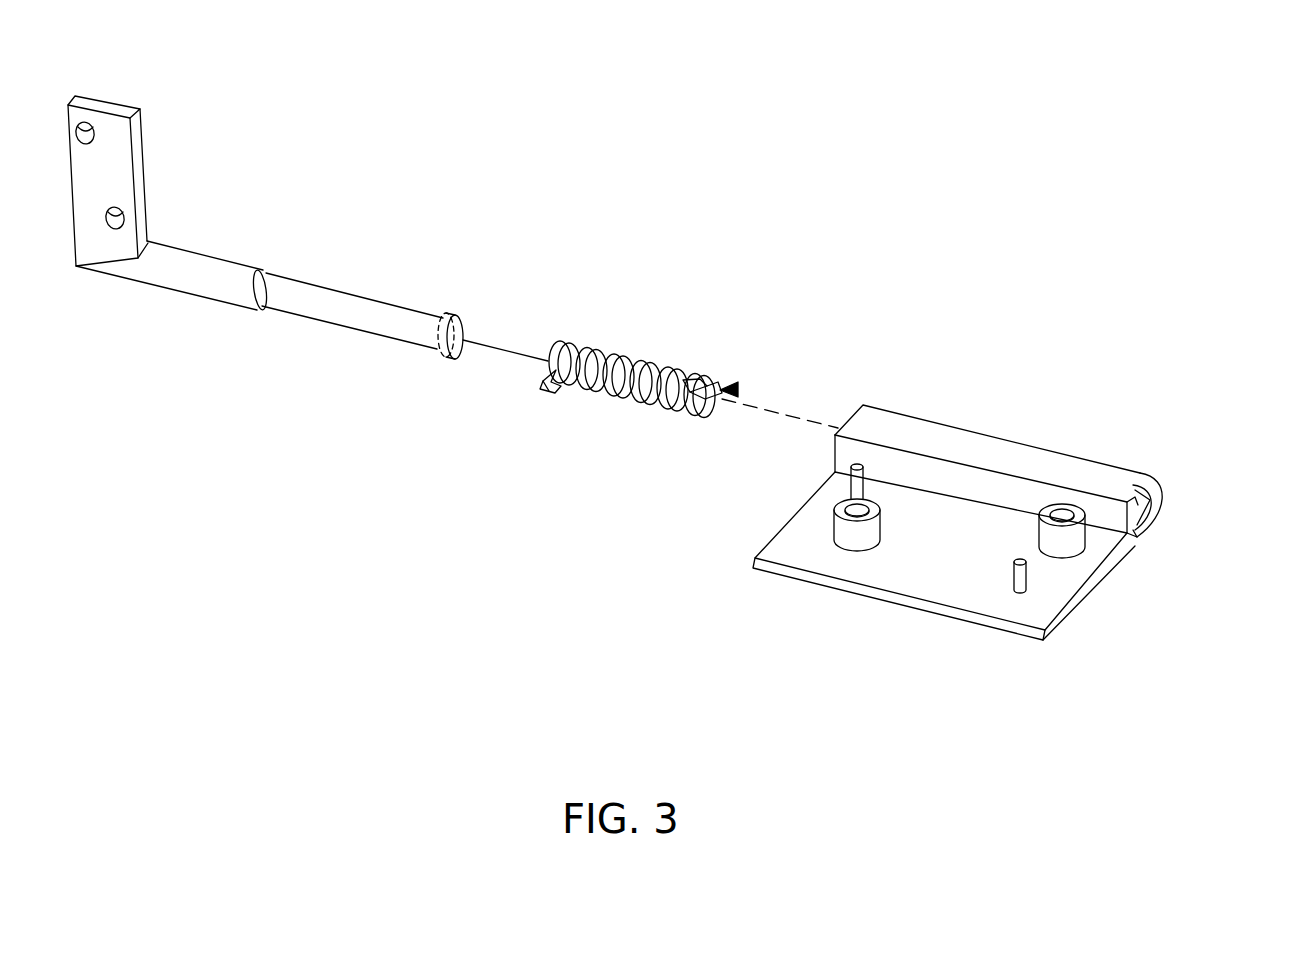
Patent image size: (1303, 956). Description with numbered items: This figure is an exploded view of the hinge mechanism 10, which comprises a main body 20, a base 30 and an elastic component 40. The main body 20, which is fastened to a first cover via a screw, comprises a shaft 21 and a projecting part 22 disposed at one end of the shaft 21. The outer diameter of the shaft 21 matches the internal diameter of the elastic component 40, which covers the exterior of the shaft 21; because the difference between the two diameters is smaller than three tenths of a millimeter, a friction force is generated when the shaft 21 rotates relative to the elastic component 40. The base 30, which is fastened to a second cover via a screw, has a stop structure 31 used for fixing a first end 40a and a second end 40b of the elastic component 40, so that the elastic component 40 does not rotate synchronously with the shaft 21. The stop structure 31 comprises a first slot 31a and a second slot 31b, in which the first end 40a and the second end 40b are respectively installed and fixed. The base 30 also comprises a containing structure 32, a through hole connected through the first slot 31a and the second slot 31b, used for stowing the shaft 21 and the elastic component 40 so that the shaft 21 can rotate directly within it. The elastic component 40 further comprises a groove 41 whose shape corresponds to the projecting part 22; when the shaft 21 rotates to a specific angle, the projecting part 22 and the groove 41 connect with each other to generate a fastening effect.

The hinge mechanism 10 is at (1130, 183).
The main body 20 is at (107, 267).
The shaft 21 is at (345, 320).
The projecting part 22 is at (457, 312).
The base 30 is at (933, 598).
The stop structure 31 is at (1293, 570).
The first slot 31a is at (1152, 518).
The second slot 31b is at (1152, 552).
The containing structure 32 is at (1175, 498).
The elastic component 40 is at (615, 397).
The first end 40a is at (702, 413).
The second end 40b is at (543, 392).
The groove 41 is at (737, 390).